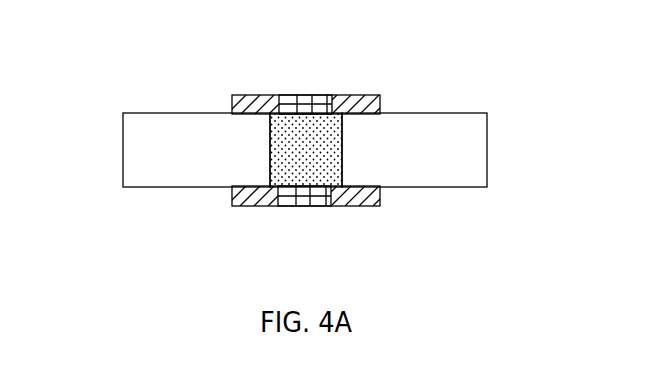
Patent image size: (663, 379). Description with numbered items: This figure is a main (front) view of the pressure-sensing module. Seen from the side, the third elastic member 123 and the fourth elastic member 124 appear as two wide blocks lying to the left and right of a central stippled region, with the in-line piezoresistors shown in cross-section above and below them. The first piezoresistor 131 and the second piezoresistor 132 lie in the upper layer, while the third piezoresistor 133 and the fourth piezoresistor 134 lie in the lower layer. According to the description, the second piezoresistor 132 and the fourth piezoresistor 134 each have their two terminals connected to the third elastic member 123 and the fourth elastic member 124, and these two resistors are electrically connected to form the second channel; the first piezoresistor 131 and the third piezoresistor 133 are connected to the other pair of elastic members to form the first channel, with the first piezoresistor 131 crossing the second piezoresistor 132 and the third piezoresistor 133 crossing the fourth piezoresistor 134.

The third elastic member 123 is at (145, 150).
The fourth elastic member 124 is at (473, 155).
The first piezoresistor 131 is at (302, 95).
The second piezoresistor 132 is at (363, 97).
The third piezoresistor 133 is at (297, 200).
The fourth piezoresistor 134 is at (353, 200).